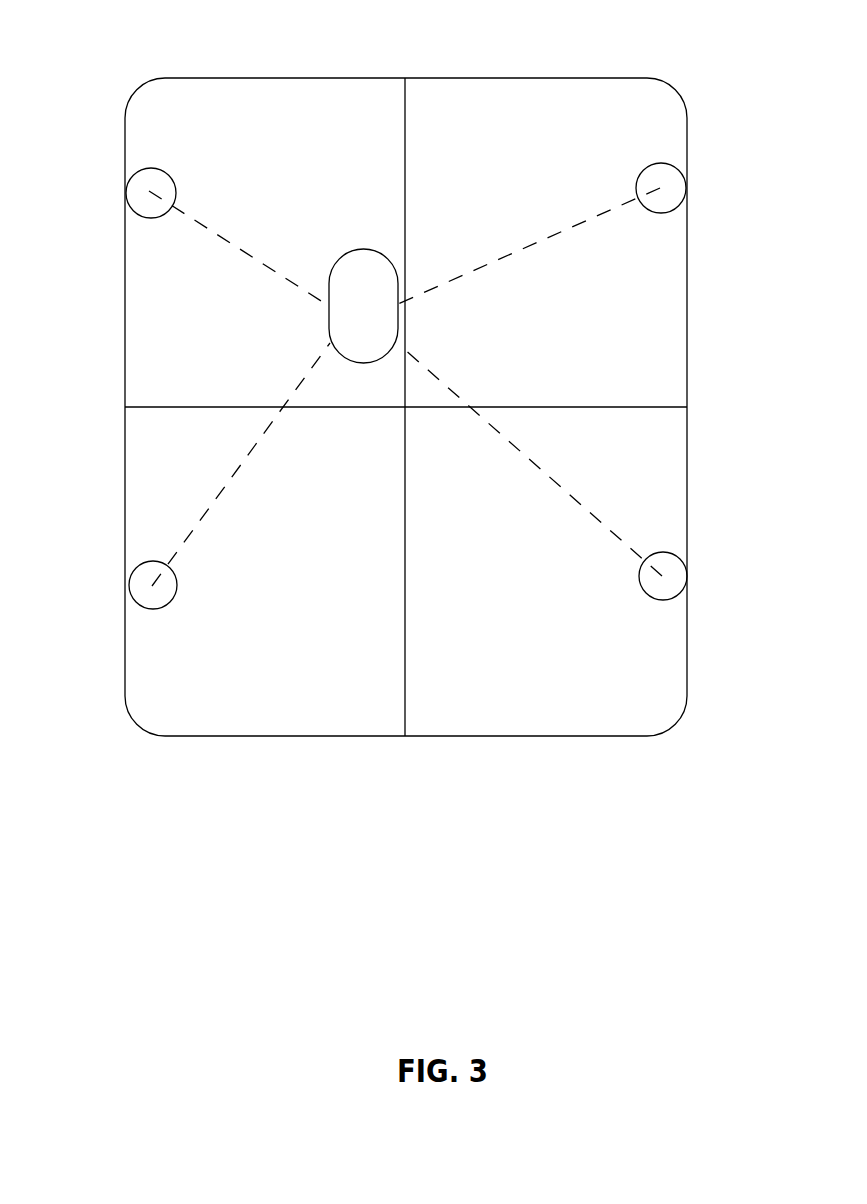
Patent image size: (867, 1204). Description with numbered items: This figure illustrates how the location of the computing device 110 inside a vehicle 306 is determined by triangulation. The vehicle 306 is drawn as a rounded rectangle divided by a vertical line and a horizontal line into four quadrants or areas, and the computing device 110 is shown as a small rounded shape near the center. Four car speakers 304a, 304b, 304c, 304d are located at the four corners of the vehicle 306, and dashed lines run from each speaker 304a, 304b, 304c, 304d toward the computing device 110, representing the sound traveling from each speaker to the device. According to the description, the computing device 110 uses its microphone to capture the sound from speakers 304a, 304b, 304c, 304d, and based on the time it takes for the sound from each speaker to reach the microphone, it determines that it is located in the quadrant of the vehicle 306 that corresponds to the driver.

The vehicle 306 is at (255, 79).
The computing device 110 is at (347, 257).
The car speaker 304a is at (125, 193).
The car speaker 304b is at (686, 178).
The car speaker 304c is at (126, 586).
The car speaker 304d is at (688, 572).